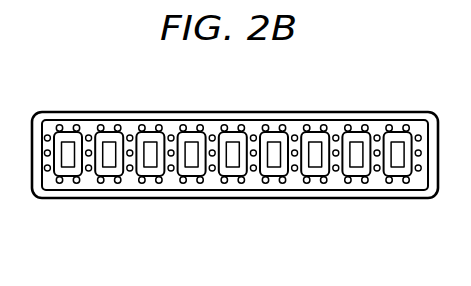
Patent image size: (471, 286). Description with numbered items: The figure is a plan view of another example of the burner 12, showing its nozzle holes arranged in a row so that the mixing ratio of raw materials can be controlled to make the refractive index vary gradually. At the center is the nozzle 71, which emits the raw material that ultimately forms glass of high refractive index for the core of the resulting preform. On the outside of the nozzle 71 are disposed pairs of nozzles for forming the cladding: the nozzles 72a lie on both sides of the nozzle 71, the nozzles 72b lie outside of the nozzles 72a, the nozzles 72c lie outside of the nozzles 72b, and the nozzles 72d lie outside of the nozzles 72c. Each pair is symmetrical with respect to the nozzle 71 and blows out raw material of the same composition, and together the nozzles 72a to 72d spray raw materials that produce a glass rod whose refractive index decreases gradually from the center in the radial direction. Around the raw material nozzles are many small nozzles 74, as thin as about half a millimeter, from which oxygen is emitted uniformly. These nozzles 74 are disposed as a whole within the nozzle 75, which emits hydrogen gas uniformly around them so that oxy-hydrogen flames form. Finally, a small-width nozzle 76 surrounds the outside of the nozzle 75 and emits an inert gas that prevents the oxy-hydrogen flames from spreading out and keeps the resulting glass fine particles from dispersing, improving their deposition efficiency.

The burner 12 is at (362, 114).
The nozzle 71 is at (233, 146).
The nozzles 72a is at (192, 163).
The nozzles 72b is at (150, 163).
The nozzles 72c is at (110, 163).
The nozzles 72d is at (69, 163).
The nozzles 74 is at (263, 99).
The nozzle 75 is at (131, 125).
The nozzle 76 is at (71, 117).